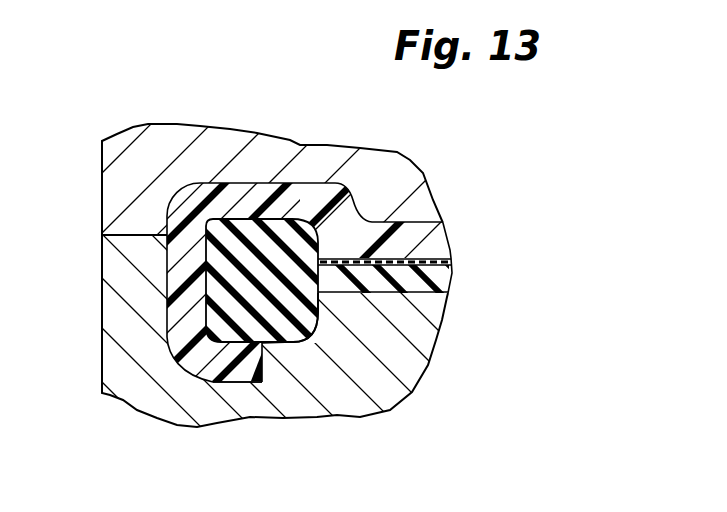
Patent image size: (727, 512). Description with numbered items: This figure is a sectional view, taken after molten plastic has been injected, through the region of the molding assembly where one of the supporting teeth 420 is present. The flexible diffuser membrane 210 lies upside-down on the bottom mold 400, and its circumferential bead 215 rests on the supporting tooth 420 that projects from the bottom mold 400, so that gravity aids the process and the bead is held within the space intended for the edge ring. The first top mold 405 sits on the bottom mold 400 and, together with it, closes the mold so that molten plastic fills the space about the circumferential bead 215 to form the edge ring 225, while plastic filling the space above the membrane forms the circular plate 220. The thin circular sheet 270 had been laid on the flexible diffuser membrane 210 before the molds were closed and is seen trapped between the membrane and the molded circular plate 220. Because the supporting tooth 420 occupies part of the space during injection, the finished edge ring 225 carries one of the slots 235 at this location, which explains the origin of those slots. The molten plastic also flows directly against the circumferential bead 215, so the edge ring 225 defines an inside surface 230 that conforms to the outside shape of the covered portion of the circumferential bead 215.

The inside surface 230 is at (248, 220).
The edge ring 225 is at (183, 371).
The circular plate 220 is at (425, 227).
The thin circular sheet 270 is at (452, 263).
The flexible diffuser membrane 210 is at (410, 295).
The circumferential bead 215 is at (307, 319).
The slots 235 is at (286, 349).
The supporting teeth 420 is at (283, 430).
The bottom mold 400 is at (102, 325).
The first top mold 405 is at (102, 208).